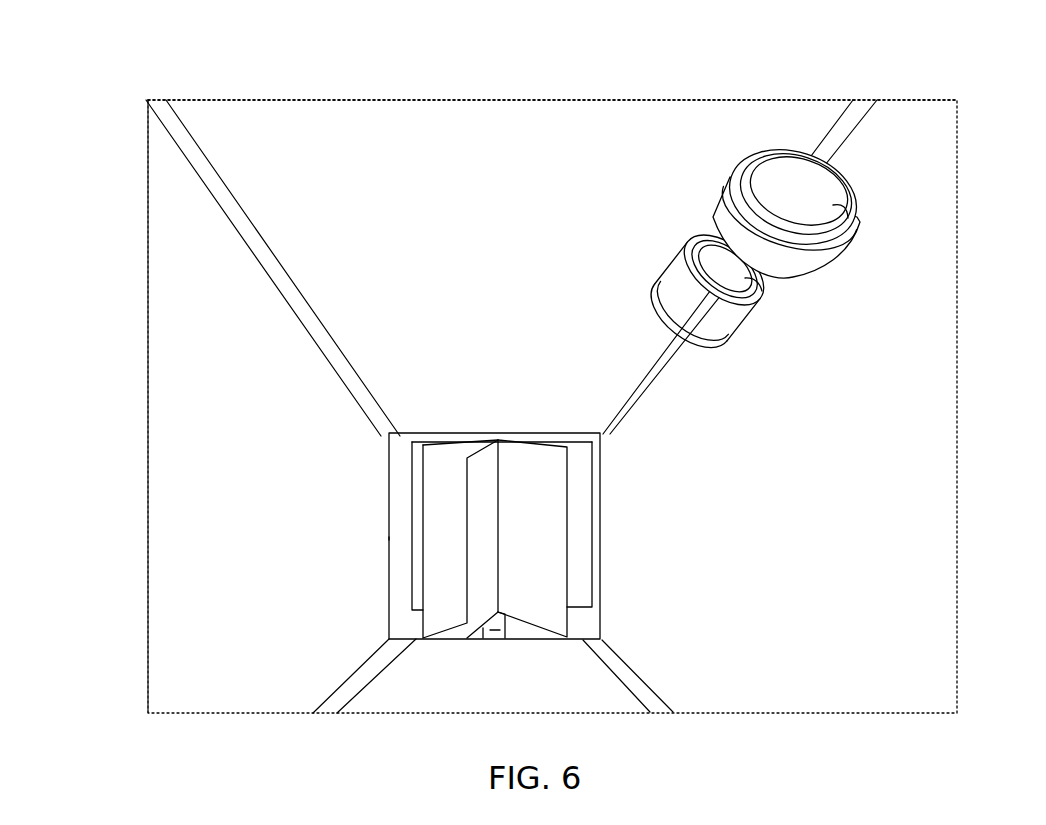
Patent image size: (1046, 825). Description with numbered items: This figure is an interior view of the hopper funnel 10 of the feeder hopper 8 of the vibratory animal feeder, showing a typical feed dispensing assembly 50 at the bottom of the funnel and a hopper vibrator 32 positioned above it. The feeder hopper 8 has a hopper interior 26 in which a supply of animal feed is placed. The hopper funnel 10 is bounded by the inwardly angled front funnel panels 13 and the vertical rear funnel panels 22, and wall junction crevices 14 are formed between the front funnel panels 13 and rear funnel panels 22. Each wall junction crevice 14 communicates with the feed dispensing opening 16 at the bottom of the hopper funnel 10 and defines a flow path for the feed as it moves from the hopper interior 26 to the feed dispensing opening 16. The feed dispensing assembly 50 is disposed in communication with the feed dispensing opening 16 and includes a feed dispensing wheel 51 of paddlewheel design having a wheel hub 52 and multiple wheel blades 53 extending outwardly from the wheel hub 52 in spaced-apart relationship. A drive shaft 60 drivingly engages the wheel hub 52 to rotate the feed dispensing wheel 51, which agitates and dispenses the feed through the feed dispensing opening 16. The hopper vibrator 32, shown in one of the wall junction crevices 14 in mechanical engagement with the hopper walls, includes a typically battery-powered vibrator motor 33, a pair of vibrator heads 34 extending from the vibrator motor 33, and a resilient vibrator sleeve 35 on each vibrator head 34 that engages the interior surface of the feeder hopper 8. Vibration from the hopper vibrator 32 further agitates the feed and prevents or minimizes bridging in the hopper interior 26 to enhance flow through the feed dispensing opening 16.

The feeder hopper 8 is at (117, 90).
The hopper funnel 10 is at (137, 231).
The hopper interior 26 is at (409, 135).
The wall junction crevices 14 is at (290, 283).
The front funnel panels 13 is at (245, 431).
The rear funnel panels 22 is at (540, 334).
The feed dispensing assembly 50 is at (422, 420).
The feed dispensing wheel 51 is at (404, 490).
The feed dispensing opening 16 is at (398, 537).
The wheel hub 52 is at (498, 446).
The wheel blades 53 is at (553, 523).
The drive shaft 60 is at (496, 628).
The hopper vibrator 32 is at (725, 247).
The vibrator motor 33 is at (787, 286).
The vibrator heads 34 is at (672, 305).
The vibrator sleeves 35 is at (729, 208).